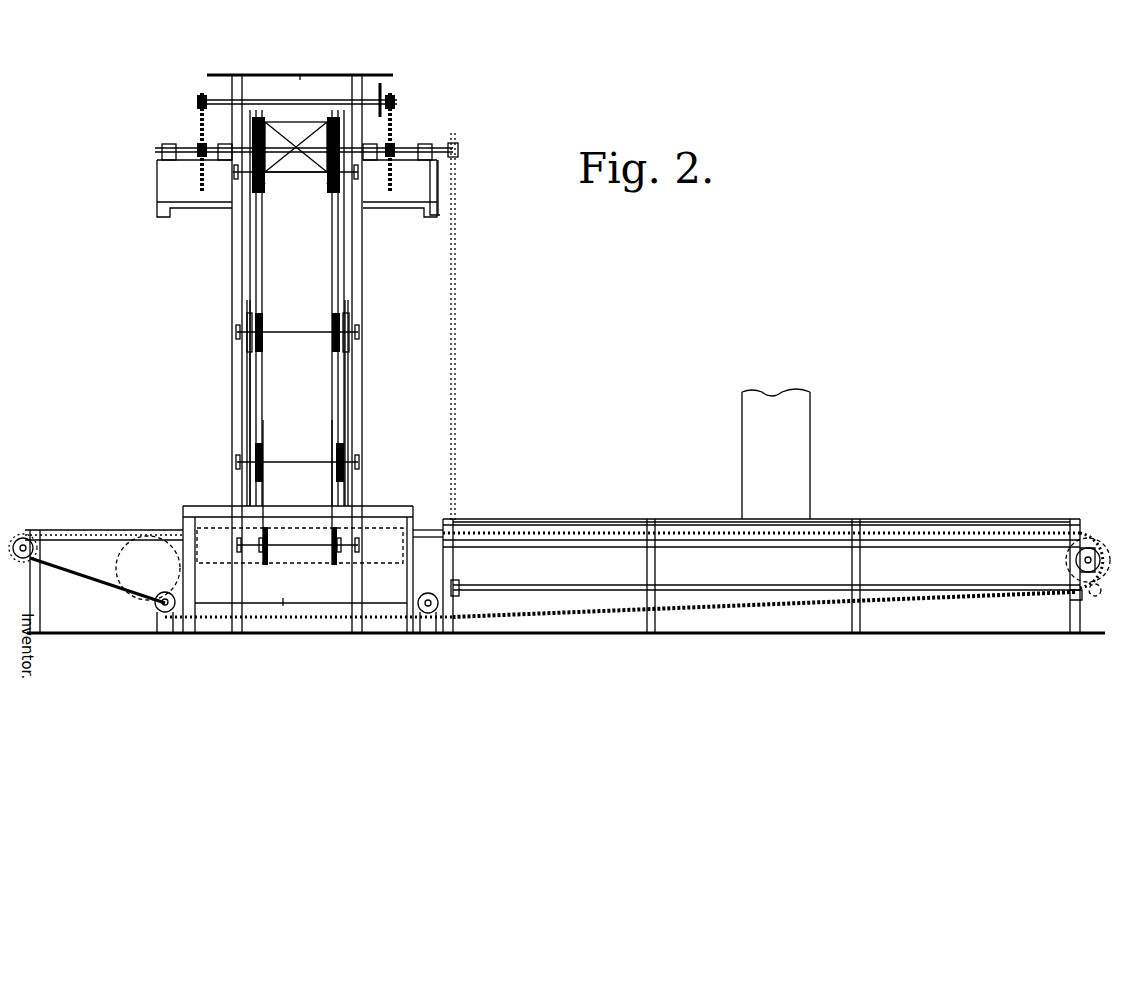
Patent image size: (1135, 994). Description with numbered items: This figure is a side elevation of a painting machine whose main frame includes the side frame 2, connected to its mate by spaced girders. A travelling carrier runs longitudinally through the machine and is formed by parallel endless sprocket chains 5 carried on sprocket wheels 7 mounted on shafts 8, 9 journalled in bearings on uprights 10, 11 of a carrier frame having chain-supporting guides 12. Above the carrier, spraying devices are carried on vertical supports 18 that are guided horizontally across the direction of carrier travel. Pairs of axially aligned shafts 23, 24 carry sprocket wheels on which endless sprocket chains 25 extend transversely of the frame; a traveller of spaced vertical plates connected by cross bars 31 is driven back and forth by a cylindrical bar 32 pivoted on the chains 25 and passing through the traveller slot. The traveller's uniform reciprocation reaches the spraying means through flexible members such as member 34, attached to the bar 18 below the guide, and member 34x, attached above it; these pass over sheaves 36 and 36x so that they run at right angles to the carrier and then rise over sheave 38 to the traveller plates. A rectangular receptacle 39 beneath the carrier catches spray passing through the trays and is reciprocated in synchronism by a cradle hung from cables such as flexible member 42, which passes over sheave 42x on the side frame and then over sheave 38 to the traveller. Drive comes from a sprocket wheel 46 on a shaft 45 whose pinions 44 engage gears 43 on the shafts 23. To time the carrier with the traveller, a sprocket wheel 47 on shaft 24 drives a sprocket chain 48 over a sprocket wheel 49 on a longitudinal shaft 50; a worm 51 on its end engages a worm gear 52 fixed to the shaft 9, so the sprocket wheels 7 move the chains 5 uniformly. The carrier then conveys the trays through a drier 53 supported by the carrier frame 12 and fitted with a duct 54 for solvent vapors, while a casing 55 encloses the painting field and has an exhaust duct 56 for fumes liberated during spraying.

The side frame 2 is at (232, 418).
The endless sprocket chains 5 is at (427, 531).
The sprocket wheel 7 is at (22, 540).
The shaft 8 is at (34, 536).
The shaft 9 is at (1085, 563).
The upright 10 is at (37, 601).
The upright 11 is at (1070, 618).
The chain-supporting guides 12 is at (128, 530).
The vertical supports 18 is at (344, 385).
The shafts 23 is at (182, 150).
The shafts 24 is at (413, 150).
The endless sprocket chains 25 is at (253, 118).
The cross bars 31 is at (296, 147).
The cylindrical bar 32 is at (292, 124).
The flexible member 34 is at (250, 266).
The flexible member 34x is at (334, 282).
The sheave 36 is at (336, 447).
The sheave 36x is at (256, 318).
The sheave 38 is at (327, 185).
The receptacle 39 is at (296, 558).
The flexible member 42 is at (332, 490).
The sheave 42x is at (333, 528).
The gears 43 is at (200, 135).
The pinions 44 is at (202, 95).
The shaft 45 is at (313, 100).
The sprocket wheel 46 is at (382, 84).
The sprocket wheel 47 is at (456, 140).
The sprocket chain 48 is at (456, 340).
The sprocket wheel 49 is at (459, 586).
The shaft 50 is at (578, 588).
The worm 51 is at (1075, 599).
The worm gear 52 is at (1098, 594).
The drier 53 is at (615, 519).
The duct 54 is at (810, 476).
The casing 55 is at (283, 606).
The exhaust duct 56 is at (118, 567).